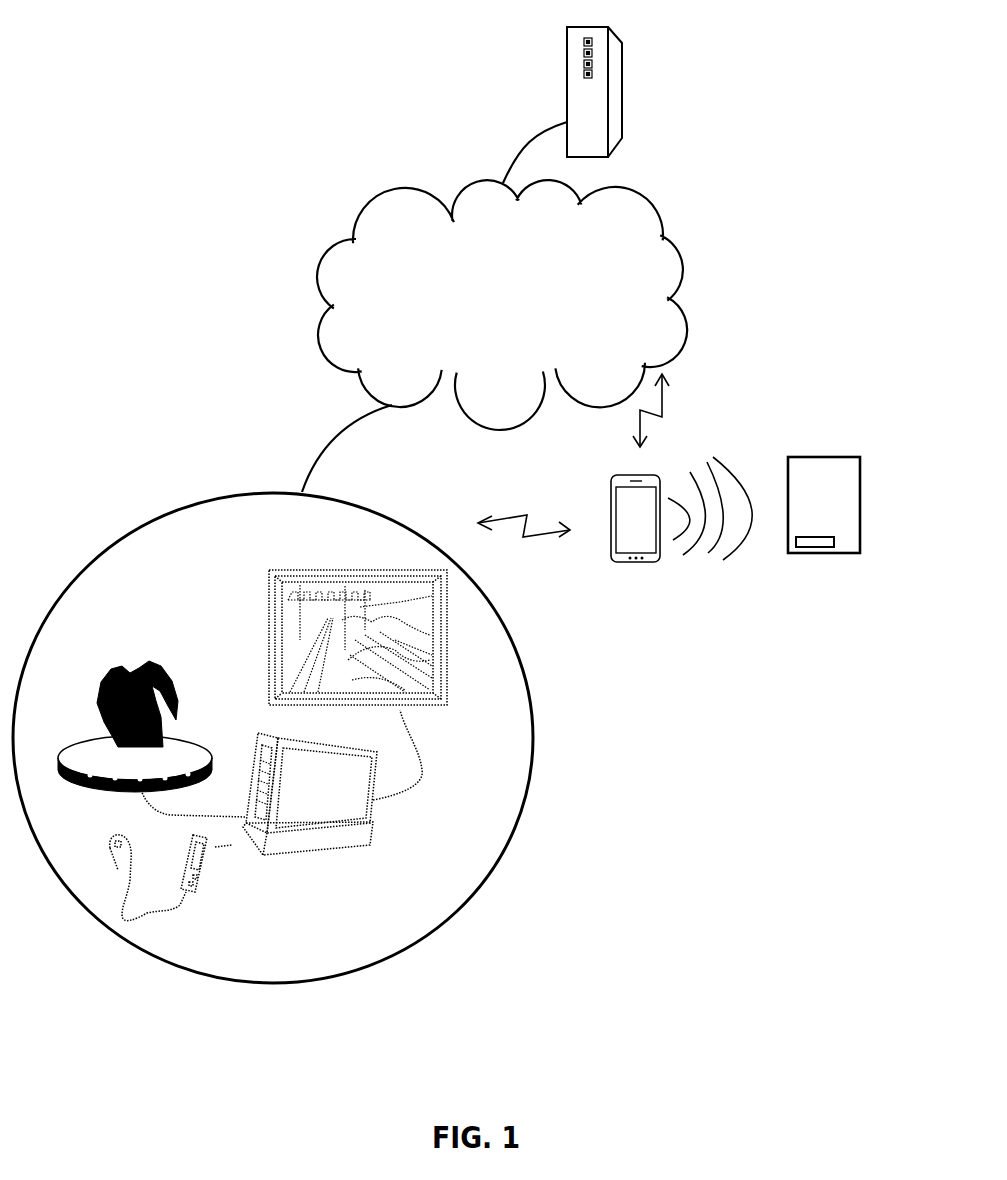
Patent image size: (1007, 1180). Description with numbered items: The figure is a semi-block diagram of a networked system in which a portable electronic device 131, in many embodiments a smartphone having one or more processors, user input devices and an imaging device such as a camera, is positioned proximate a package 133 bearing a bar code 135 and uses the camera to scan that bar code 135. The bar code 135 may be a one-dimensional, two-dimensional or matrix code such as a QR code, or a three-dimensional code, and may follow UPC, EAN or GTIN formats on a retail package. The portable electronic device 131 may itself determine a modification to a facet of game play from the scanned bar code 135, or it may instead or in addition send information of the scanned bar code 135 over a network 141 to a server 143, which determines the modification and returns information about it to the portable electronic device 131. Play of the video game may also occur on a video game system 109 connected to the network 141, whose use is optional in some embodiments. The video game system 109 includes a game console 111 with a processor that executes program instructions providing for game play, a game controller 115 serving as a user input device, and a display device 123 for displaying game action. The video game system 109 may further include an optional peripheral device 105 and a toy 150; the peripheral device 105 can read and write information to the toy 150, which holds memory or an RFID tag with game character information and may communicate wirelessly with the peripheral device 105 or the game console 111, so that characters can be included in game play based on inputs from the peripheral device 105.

The peripheral device 105 is at (212, 758).
The video game system 109 is at (512, 827).
The game console 111 is at (335, 847).
The game controller 115 is at (197, 887).
The display device 123 is at (448, 655).
The portable electronic device 131 is at (636, 565).
The package 133 is at (815, 456).
The bar code 135 is at (815, 548).
The network 141 is at (673, 237).
The server 143 is at (622, 85).
The toy 150 is at (113, 680).